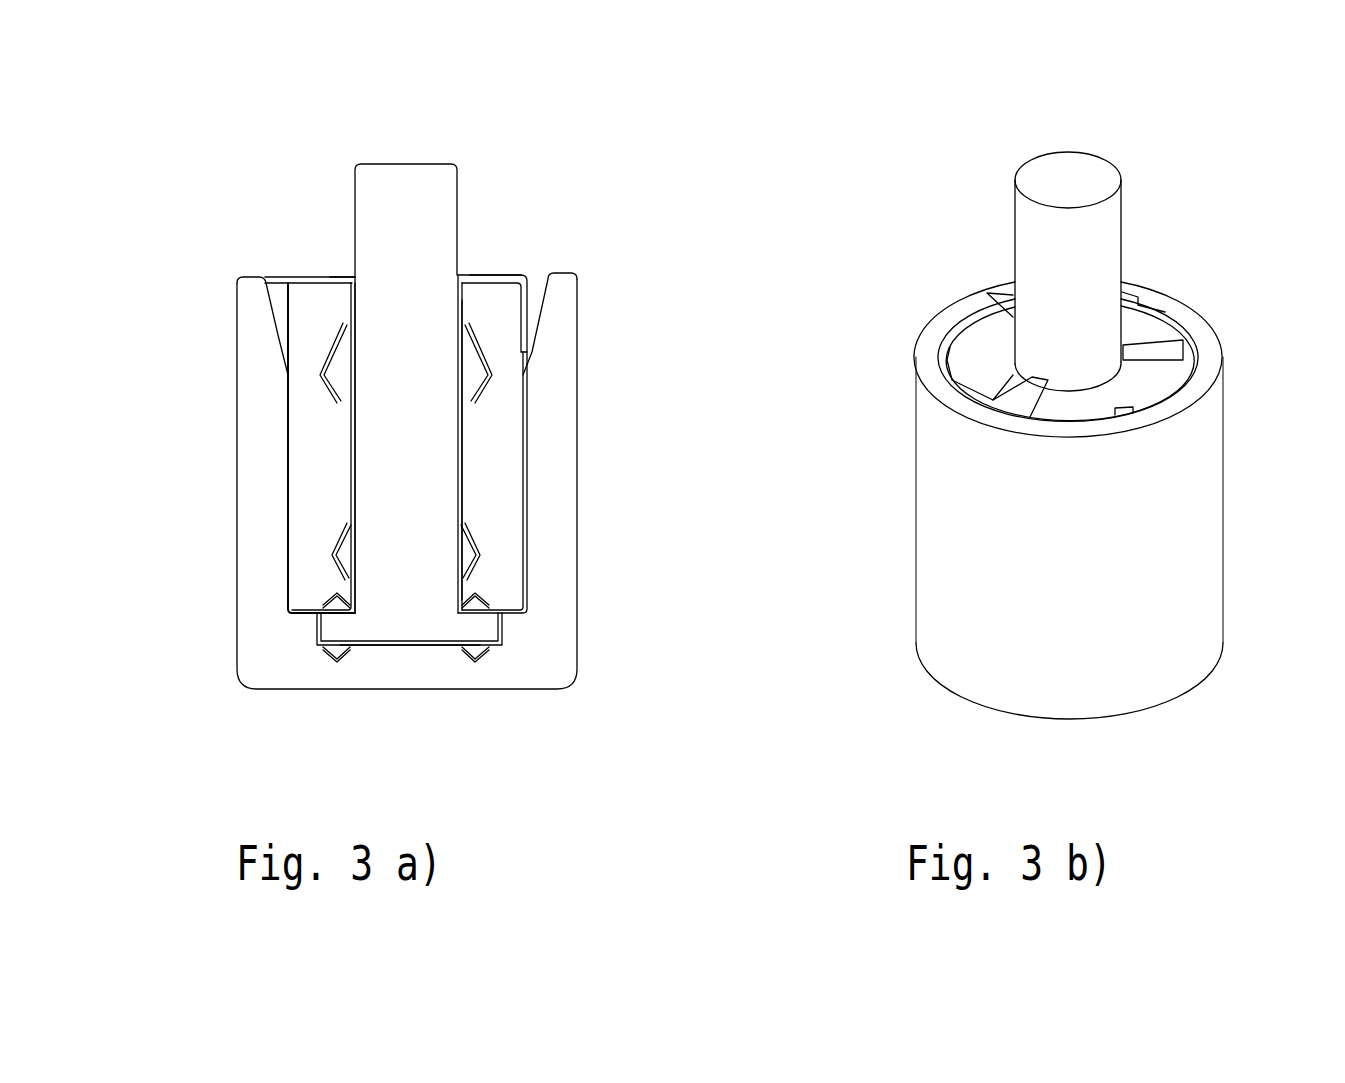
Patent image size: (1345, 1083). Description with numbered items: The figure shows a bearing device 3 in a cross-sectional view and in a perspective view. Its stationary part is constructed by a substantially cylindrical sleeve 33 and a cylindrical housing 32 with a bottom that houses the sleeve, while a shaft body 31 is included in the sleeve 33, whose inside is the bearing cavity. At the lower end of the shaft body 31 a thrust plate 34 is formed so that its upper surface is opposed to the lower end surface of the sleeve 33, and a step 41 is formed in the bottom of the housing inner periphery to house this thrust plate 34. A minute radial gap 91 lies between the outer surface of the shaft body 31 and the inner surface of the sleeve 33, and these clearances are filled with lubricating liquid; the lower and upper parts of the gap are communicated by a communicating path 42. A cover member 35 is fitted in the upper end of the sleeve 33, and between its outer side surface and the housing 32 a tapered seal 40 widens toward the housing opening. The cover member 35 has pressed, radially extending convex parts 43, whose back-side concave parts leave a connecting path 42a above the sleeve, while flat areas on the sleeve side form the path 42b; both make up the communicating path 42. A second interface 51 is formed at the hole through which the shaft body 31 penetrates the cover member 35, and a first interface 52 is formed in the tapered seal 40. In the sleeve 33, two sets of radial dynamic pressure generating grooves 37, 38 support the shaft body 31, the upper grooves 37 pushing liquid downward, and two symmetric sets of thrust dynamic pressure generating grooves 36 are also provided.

The bearing device 3 is at (487, 147).
The shaft body 31 is at (393, 183).
The housing 32 is at (710, 513).
The sleeve 33 is at (490, 467).
The thrust plate 34 is at (503, 652).
The cover member 35 is at (508, 275).
The thrust dynamic pressure generating grooves 36 is at (322, 667).
The dynamic pressure generating grooves 37 is at (318, 398).
The dynamic pressure generating grooves 38 is at (322, 552).
The tapered seal 40 is at (538, 300).
The step 41 is at (512, 626).
The communicating path 42 is at (737, 252).
The connecting path 42a is at (432, 415).
The communicating path 42b is at (600, 439).
The convex parts 43 is at (1024, 387).
The second interface 51 is at (352, 276).
The first interface 52 is at (276, 348).
The radial gap 91 is at (357, 465).